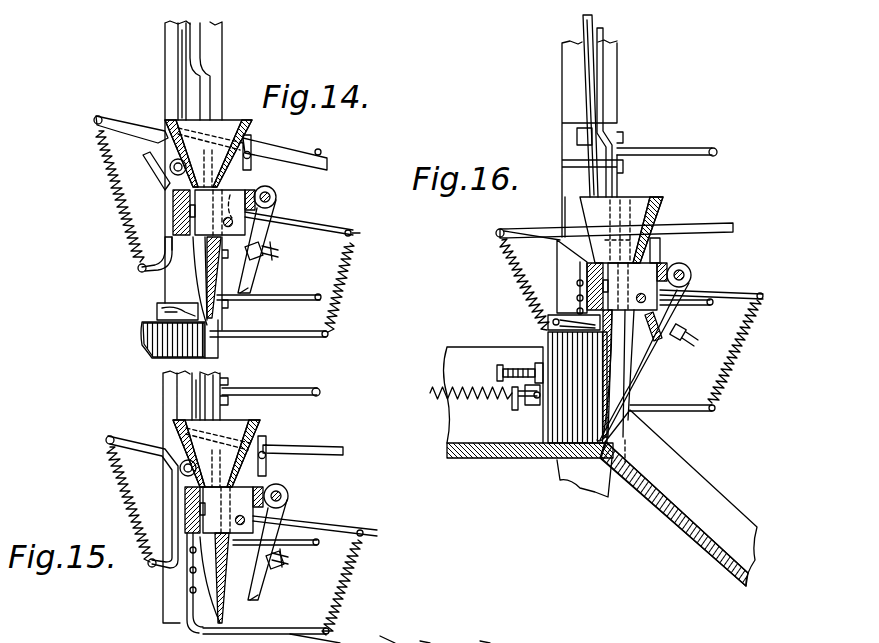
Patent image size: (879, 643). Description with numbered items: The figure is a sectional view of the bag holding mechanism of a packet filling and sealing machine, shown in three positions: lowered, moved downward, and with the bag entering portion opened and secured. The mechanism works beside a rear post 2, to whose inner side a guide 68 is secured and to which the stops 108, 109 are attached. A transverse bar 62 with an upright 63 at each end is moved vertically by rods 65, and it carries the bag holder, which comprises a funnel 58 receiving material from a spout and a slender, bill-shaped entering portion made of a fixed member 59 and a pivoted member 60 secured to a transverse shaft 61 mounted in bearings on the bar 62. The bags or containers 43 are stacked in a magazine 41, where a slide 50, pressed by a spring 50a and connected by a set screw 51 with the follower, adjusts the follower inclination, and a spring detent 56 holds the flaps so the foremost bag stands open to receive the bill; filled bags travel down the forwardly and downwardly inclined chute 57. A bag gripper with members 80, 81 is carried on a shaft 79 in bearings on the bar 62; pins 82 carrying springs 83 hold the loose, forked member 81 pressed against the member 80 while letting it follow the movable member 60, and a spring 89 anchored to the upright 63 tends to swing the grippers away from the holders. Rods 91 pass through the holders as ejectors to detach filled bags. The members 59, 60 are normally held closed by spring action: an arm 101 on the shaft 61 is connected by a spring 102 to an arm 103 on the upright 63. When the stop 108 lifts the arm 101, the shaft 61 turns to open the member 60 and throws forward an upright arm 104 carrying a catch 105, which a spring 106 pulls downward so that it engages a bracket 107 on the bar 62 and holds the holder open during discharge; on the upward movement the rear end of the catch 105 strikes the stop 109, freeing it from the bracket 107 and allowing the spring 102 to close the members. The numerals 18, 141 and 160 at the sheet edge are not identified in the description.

In FIG. 14, the rear post 2 is at (223, 347).
In FIG. 15, the rear post 2 is at (207, 375).
In FIG. 16, the rear post 2 is at (613, 80).
In FIG. 15, the machine part 18 is at (396, 632).
In FIG. 16, the magazine 41 is at (507, 446).
In FIG. 14, the bags or containers 43 is at (157, 347).
In FIG. 16, the bags or containers 43 is at (635, 392).
In FIG. 16, the slide 50 is at (515, 365).
In FIG. 16, the spring 50a is at (443, 415).
In FIG. 16, the set screw 51 is at (497, 372).
In FIG. 14, the detent 56 is at (157, 312).
In FIG. 16, the detent 56 is at (548, 330).
In FIG. 15, the chute 57 is at (368, 640).
In FIG. 16, the chute 57 is at (693, 530).
In FIG. 14, the funnel 58 is at (228, 127).
In FIG. 15, the funnel 58 is at (263, 425).
In FIG. 16, the funnel 58 is at (643, 200).
In FIG. 14, the fixed member 59 is at (203, 255).
In FIG. 15, the fixed member 59 is at (200, 575).
In FIG. 16, the fixed member 59 is at (635, 368).
In FIG. 14, the movable member 60 is at (220, 268).
In FIG. 15, the movable member 60 is at (230, 593).
In FIG. 16, the movable member 60 is at (643, 377).
In FIG. 14, the transverse shaft 61 is at (240, 189).
In FIG. 15, the transverse shaft 61 is at (247, 540).
In FIG. 16, the transverse shaft 61 is at (667, 320).
In FIG. 14, the transverse bar 62 is at (175, 205).
In FIG. 15, the transverse bar 62 is at (185, 495).
In FIG. 16, the transverse bar 62 is at (587, 290).
In FIG. 16, the upright 63 is at (567, 232).
In FIG. 14, the rod 65 is at (182, 75).
In FIG. 16, the rod 65 is at (582, 25).
In FIG. 16, the guide 68 is at (565, 202).
In FIG. 14, the shaft 79 is at (277, 196).
In FIG. 15, the shaft 79 is at (288, 492).
In FIG. 16, the shaft 79 is at (692, 275).
In FIG. 14, the gripper member 80 is at (287, 213).
In FIG. 15, the gripper member 80 is at (294, 513).
In FIG. 16, the gripper member 80 is at (648, 345).
In FIG. 14, the gripper member 81 is at (257, 270).
In FIG. 15, the gripper member 81 is at (263, 573).
In FIG. 14, the pin 82 is at (280, 262).
In FIG. 15, the pin 82 is at (284, 563).
In FIG. 16, the pin 82 is at (684, 338).
In FIG. 14, the spring 83 is at (278, 252).
In FIG. 15, the spring 83 is at (276, 567).
In FIG. 16, the spring 83 is at (735, 355).
In FIG. 16, the spring 89 is at (665, 270).
In FIG. 14, the rod 91 is at (203, 68).
In FIG. 15, the rod 91 is at (222, 413).
In FIG. 16, the rod 91 is at (604, 34).
In FIG. 14, the arm 101 is at (362, 234).
In FIG. 15, the arm 101 is at (378, 535).
In FIG. 16, the arm 101 is at (746, 292).
In FIG. 14, the spring 102 is at (338, 318).
In FIG. 15, the spring 102 is at (353, 590).
In FIG. 16, the spring 102 is at (727, 388).
In FIG. 14, the arm 103 is at (278, 338).
In FIG. 15, the arm 103 is at (266, 631).
In FIG. 16, the arm 103 is at (693, 414).
In FIG. 14, the arm 104 is at (247, 143).
In FIG. 15, the arm 104 is at (264, 465).
In FIG. 16, the arm 104 is at (651, 252).
In FIG. 14, the catch 105 is at (137, 125).
In FIG. 16, the catch 105 is at (712, 220).
In FIG. 14, the spring 106 is at (105, 168).
In FIG. 15, the spring 106 is at (130, 492).
In FIG. 16, the spring 106 is at (510, 270).
In FIG. 14, the bracket 107 is at (167, 238).
In FIG. 15, the bracket 107 is at (112, 452).
In FIG. 16, the bracket 107 is at (575, 280).
In FIG. 14, the stop 108 is at (305, 295).
In FIG. 15, the stop 108 is at (296, 546).
In FIG. 16, the stop 108 is at (713, 304).
In FIG. 14, the stop 109 is at (320, 150).
In FIG. 15, the stop 109 is at (318, 390).
In FIG. 16, the stop 109 is at (697, 148).
In FIG. 15, the machine part 141 is at (502, 637).
In FIG. 15, the machine part 160 is at (439, 637).